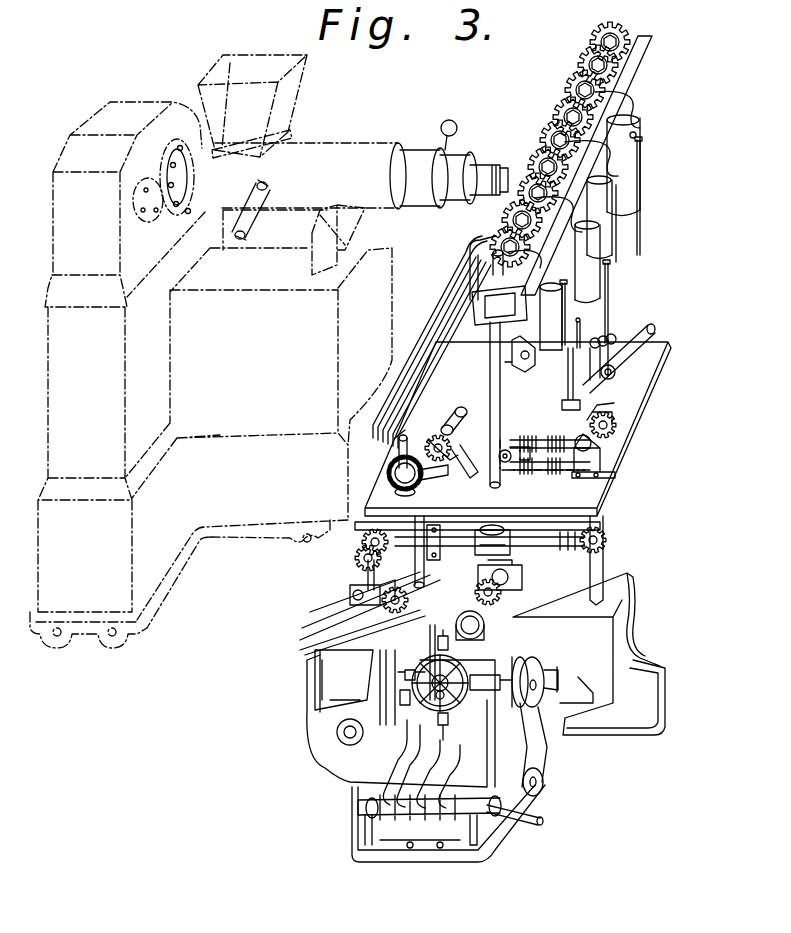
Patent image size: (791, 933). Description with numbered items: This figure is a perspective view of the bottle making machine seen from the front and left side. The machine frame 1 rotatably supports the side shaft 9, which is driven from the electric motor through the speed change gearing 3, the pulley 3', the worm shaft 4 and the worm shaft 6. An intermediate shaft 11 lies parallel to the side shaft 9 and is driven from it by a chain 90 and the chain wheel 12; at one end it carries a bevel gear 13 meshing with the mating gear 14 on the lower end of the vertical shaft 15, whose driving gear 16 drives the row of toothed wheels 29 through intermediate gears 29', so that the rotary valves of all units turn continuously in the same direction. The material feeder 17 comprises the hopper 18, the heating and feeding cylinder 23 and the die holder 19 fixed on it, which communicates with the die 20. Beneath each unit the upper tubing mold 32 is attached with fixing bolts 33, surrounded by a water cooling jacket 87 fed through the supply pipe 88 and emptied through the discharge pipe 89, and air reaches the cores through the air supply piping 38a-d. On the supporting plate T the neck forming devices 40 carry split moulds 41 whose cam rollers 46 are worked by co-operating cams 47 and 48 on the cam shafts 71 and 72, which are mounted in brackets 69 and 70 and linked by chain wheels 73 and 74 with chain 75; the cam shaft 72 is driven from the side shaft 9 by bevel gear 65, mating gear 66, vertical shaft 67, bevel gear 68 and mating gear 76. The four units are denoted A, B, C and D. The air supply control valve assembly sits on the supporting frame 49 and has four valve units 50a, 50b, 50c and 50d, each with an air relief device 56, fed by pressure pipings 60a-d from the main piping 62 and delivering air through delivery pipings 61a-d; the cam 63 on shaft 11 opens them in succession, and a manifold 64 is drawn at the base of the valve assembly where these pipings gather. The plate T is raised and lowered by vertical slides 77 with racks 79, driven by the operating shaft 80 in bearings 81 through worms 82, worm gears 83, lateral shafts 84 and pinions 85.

The machine frame 1 is at (632, 645).
The speed change gearing 3 is at (448, 823).
The pulley 3' is at (552, 680).
The worm shaft 4 is at (548, 700).
The worm shaft 6 is at (408, 730).
The side shaft 9 is at (340, 740).
The intermediate shaft 11 is at (485, 612).
The chain wheel 12 is at (504, 592).
The bevel gear 13 is at (524, 570).
The mating gear 14 is at (512, 548).
The vertical shaft 15 is at (490, 340).
The driving gear 16 is at (468, 268).
The material feeder 17 is at (397, 125).
The hopper 18 is at (257, 60).
The die holder 19 is at (455, 136).
The die 20 is at (652, 72).
The heating and feeding cylinder 23 is at (332, 143).
The toothed wheel 29 is at (546, 135).
The intermediate gear 29' is at (534, 146).
The upper tubing mold 32 is at (640, 120).
The fixing bolts 33 is at (638, 137).
The air supply piping 38a-d is at (390, 440).
The neck forming device 40 is at (611, 333).
The split moulds 41 is at (604, 340).
The cam roller 46 is at (505, 450).
The cam 47 is at (618, 372).
The cam 48 is at (500, 395).
The supporting frame 49 is at (378, 670).
The valve unit 50a is at (416, 661).
The valve unit 50b is at (495, 677).
The valve unit 50c is at (450, 725).
The valve unit 50d is at (413, 705).
The air relief device 56 is at (455, 643).
The pressure piping 60a-d is at (420, 800).
The air delivery piping 61a-d is at (300, 652).
The main piping 62 is at (535, 822).
The cam 63 is at (452, 690).
The manifold 64 is at (362, 808).
The bevel gear 65 is at (316, 636).
The mating gear 66 is at (318, 622).
The vertical shaft 67 is at (440, 548).
The bevel gear 68 is at (401, 469).
The bracket 69 is at (598, 460).
The bracket 70 is at (466, 470).
The cam shaft 71 is at (650, 332).
The cam shaft 72 is at (460, 405).
The chain wheel 73 is at (617, 428).
The chain wheel 74 is at (405, 435).
The chain 75 is at (540, 455).
The mating gear 76 is at (440, 440).
The vertical slide 77 is at (548, 522).
The rack 79 is at (430, 518).
The operating shaft 80 is at (350, 592).
The bearing 81 is at (330, 604).
The worm 82 is at (368, 572).
The worm gear 83 is at (356, 555).
The lateral shaft 84 is at (492, 535).
The pinion 85 is at (390, 520).
The water cooling jacket 87 is at (632, 212).
The supply pipe 88 is at (584, 327).
The discharge pipe 89 is at (522, 347).
The chain 90 is at (419, 601).
The bottle manufacturing unit A is at (551, 316).
The bottle manufacturing unit B is at (587, 262).
The bottle manufacturing unit C is at (599, 217).
The bottle manufacturing unit D is at (623, 165).
The supporting plate T is at (640, 398).